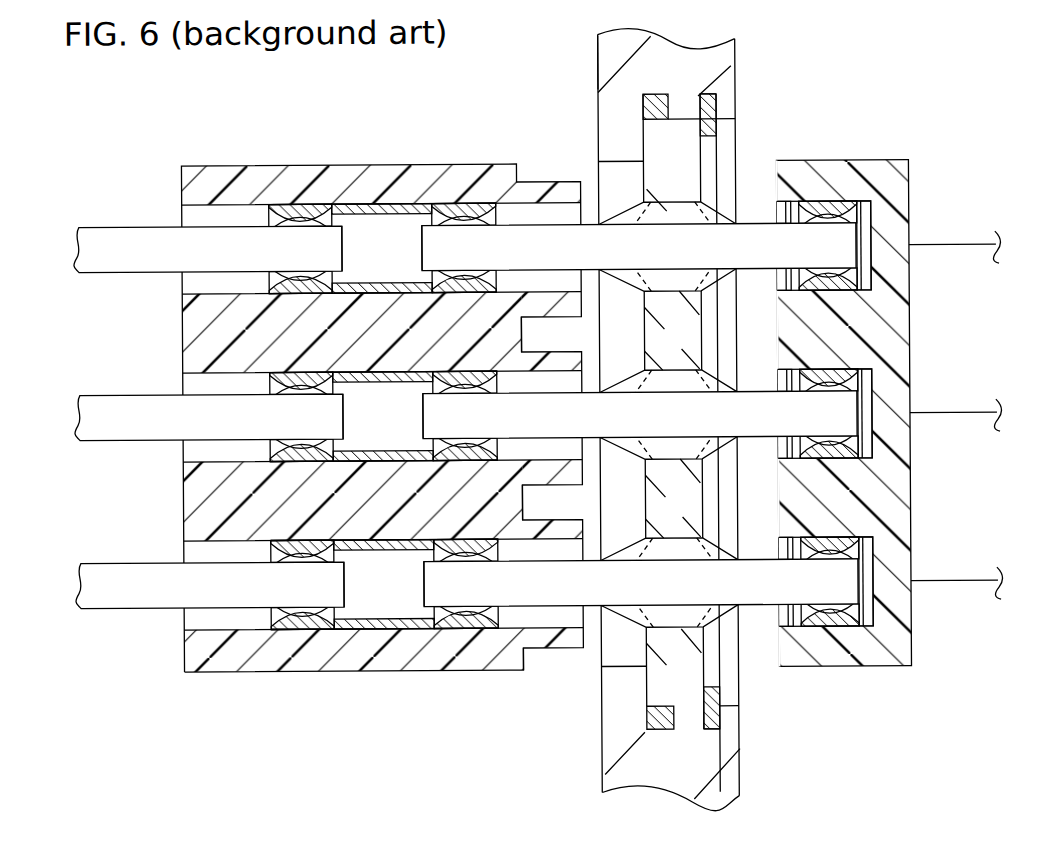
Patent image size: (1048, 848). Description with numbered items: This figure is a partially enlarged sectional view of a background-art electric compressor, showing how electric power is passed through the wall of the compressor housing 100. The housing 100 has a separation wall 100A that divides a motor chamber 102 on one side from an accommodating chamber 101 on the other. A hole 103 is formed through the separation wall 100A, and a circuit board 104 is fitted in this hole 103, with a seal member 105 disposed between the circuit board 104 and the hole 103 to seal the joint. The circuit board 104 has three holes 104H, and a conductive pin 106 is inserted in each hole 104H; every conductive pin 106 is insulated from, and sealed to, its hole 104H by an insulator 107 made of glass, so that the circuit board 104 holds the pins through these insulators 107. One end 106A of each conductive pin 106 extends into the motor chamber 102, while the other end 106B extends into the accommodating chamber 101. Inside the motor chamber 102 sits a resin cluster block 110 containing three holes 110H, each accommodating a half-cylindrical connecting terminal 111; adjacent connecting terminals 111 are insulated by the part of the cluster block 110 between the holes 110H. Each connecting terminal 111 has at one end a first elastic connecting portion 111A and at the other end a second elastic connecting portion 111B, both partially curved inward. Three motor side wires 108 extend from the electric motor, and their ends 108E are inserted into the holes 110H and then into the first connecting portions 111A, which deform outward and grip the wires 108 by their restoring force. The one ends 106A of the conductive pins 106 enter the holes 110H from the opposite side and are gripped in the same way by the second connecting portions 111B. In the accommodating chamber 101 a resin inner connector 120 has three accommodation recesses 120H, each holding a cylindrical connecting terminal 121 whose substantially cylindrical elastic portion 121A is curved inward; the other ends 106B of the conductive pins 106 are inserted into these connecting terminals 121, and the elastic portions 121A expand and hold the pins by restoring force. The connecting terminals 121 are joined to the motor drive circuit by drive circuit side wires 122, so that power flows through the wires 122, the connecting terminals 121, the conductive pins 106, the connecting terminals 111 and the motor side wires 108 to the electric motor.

The housing 100 is at (740, 47).
The separation wall 100A is at (600, 60).
The accommodating chamber 101 is at (1044, 332).
The motor chamber 102 is at (82, 338).
The hole 103 is at (672, 120).
The circuit board 104 is at (712, 708).
The hole 104H is at (680, 208).
The seal member 105 is at (645, 714).
The conductive pin 106 is at (594, 233).
The one end of conductive pin 106A is at (425, 256).
The other end of conductive pin 106B is at (870, 248).
The insulator 107 is at (643, 292).
The motor side wire 108 is at (100, 235).
The end of motor side wire 108E is at (343, 250).
The cluster block 110 is at (187, 164).
The hole 110H is at (228, 212).
The connecting terminal 111 is at (378, 205).
The first elastic connecting portion 111A is at (295, 212).
The second elastic connecting portion 111B is at (462, 212).
The inner connector 120 is at (904, 162).
The accommodation recess 120H is at (842, 296).
The connecting terminal 121 is at (866, 207).
The elastic portion 121A is at (828, 202).
The drive circuit side wire 122 is at (980, 249).